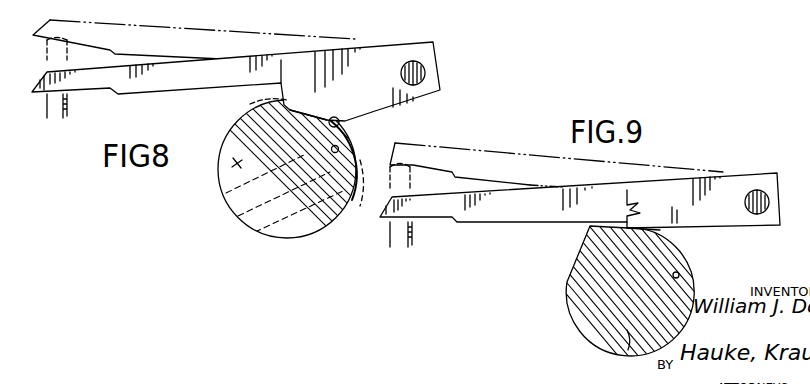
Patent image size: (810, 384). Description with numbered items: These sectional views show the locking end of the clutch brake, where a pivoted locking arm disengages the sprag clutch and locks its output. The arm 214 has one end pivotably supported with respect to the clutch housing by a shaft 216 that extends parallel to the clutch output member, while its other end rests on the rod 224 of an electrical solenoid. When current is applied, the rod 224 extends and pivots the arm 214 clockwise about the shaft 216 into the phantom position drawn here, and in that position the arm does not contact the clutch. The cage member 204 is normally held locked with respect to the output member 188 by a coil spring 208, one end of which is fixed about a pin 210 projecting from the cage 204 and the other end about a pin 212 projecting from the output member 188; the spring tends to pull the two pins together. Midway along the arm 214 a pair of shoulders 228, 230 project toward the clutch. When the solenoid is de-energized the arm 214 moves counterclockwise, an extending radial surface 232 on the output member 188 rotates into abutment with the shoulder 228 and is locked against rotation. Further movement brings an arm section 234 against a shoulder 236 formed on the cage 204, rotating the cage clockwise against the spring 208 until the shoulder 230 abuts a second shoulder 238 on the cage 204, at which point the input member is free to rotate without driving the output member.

In FIG. 9, the output member 188 is at (631, 333).
In FIG. 8, the cage member 204 is at (253, 229).
In FIG. 8, the coil spring 208 is at (330, 216).
In FIG. 9, the coil spring 208 is at (679, 303).
In FIG. 8, the pin 210 is at (236, 88).
In FIG. 8, the pin 212 is at (351, 131).
In FIG. 9, the pin 212 is at (580, 214).
In FIG. 8, the arm 214 is at (226, 71).
In FIG. 9, the arm 214 is at (524, 196).
In FIG. 8, the shaft 216 is at (421, 66).
In FIG. 9, the shaft 216 is at (759, 215).
In FIG. 8, the rod 224 is at (67, 111).
In FIG. 9, the rod 224 is at (410, 242).
In FIG. 9, the shoulder 228 is at (658, 231).
In FIG. 8, the shoulder 230 is at (238, 163).
In FIG. 9, the radial surface 232 is at (640, 207).
In FIG. 8, the arm section 234 is at (335, 117).
In FIG. 8, the shoulder 236 is at (346, 120).
In FIG. 8, the shoulder 238 is at (272, 101).